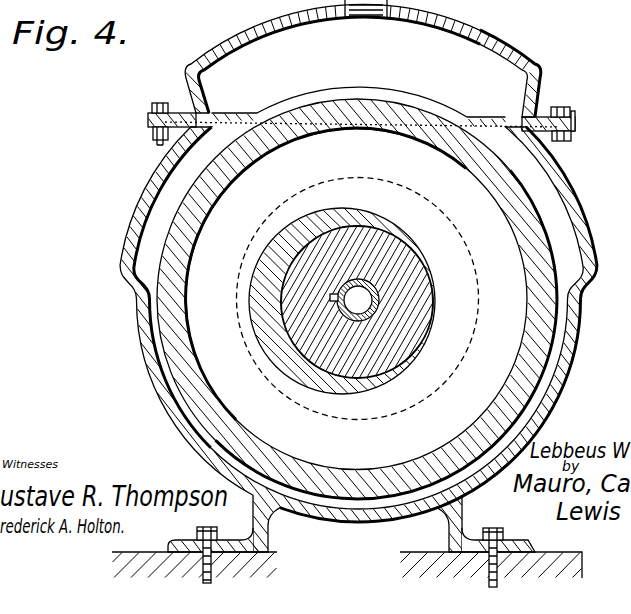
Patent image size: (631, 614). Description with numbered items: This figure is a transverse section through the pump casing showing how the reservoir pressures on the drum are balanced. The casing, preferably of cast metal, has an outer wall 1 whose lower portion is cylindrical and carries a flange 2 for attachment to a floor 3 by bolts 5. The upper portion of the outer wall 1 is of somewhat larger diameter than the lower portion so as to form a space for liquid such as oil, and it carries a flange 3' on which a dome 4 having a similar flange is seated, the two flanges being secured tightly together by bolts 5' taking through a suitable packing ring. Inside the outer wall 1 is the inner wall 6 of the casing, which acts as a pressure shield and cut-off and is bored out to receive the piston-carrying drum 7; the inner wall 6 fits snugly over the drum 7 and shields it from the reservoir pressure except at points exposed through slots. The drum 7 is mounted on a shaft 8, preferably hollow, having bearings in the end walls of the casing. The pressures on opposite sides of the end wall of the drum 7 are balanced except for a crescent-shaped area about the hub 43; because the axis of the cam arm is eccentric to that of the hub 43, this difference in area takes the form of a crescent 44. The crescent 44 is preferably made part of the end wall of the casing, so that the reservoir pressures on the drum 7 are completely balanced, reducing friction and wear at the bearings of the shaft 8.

The outer wall 1 is at (358, 319).
The flange 2 is at (178, 541).
The floor 3 is at (354, 557).
The flange 3' is at (140, 148).
The dome 4 is at (536, 70).
The bolts 5 is at (362, 546).
The flange bolts 5' is at (344, 122).
The inner wall 6 is at (540, 239).
The piston-carrying drum 7 is at (463, 358).
The shaft 8 is at (377, 286).
The hub 43 is at (426, 296).
The crescent 44 is at (352, 222).